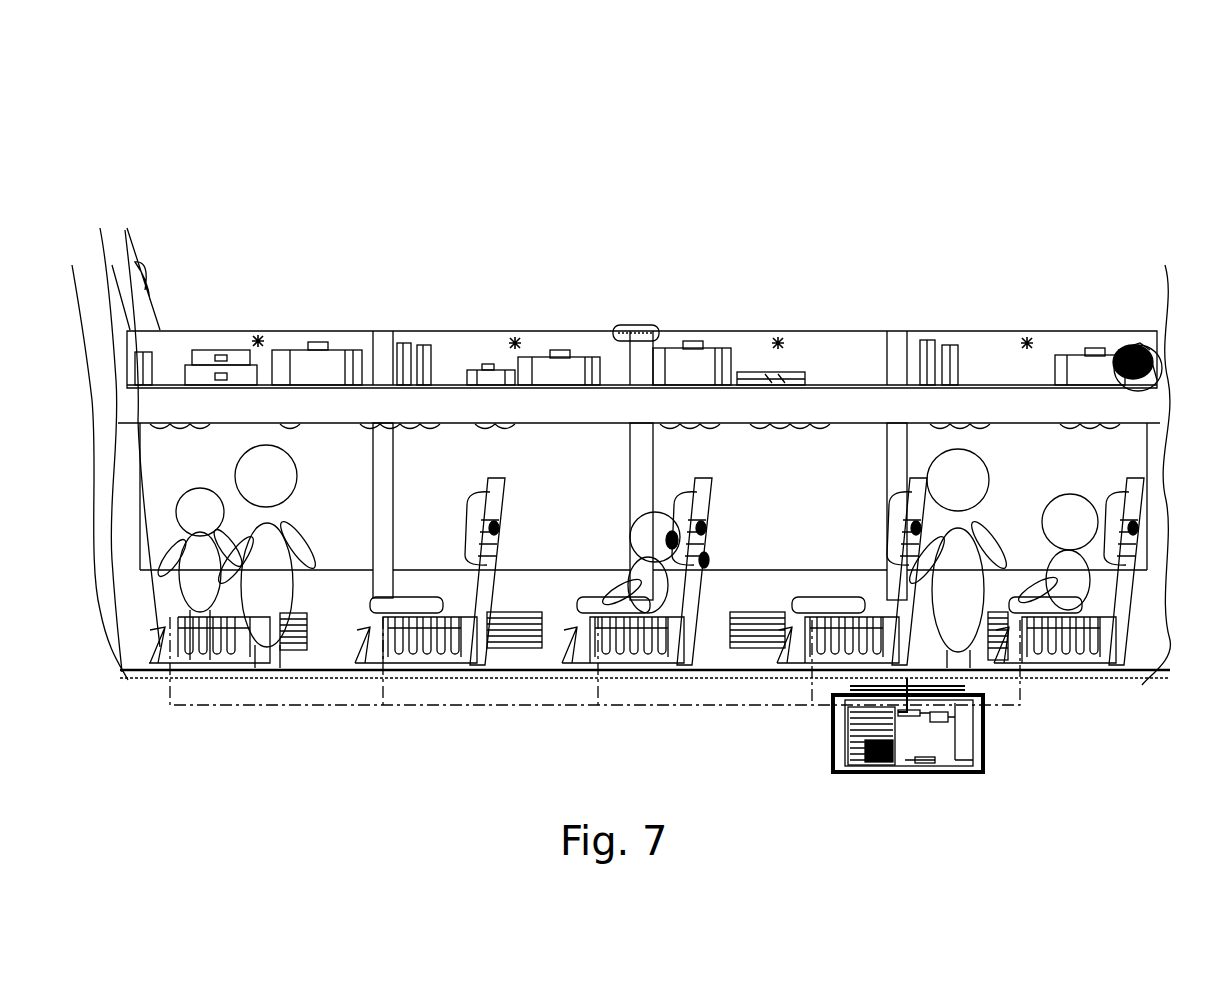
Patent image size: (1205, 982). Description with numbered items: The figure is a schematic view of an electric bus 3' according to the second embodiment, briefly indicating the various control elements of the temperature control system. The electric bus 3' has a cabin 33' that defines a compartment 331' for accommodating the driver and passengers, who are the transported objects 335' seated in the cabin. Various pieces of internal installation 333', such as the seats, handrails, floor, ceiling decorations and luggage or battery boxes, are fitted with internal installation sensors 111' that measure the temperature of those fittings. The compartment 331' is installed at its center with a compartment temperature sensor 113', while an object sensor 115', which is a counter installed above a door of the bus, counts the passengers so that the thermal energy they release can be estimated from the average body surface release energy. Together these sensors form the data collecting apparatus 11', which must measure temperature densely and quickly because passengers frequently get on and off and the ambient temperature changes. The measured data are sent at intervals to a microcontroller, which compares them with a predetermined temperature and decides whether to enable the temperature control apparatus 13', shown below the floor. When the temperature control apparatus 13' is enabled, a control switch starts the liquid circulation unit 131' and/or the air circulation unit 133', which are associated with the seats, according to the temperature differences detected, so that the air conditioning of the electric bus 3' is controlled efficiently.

The electric bus 3' is at (644, 358).
The data collecting apparatus 11' is at (887, 219).
The compartment temperature sensor 113' is at (743, 265).
The internal installation sensors 111' is at (978, 269).
The object sensor 115' is at (1116, 290).
The cabin 33' is at (642, 250).
The compartment 331' is at (643, 325).
The internal installation 333' is at (116, 433).
The transported objects 335' is at (560, 408).
The liquid circulation unit 131' is at (731, 660).
The air circulation unit 133' is at (346, 701).
The temperature control apparatus 13' is at (981, 725).